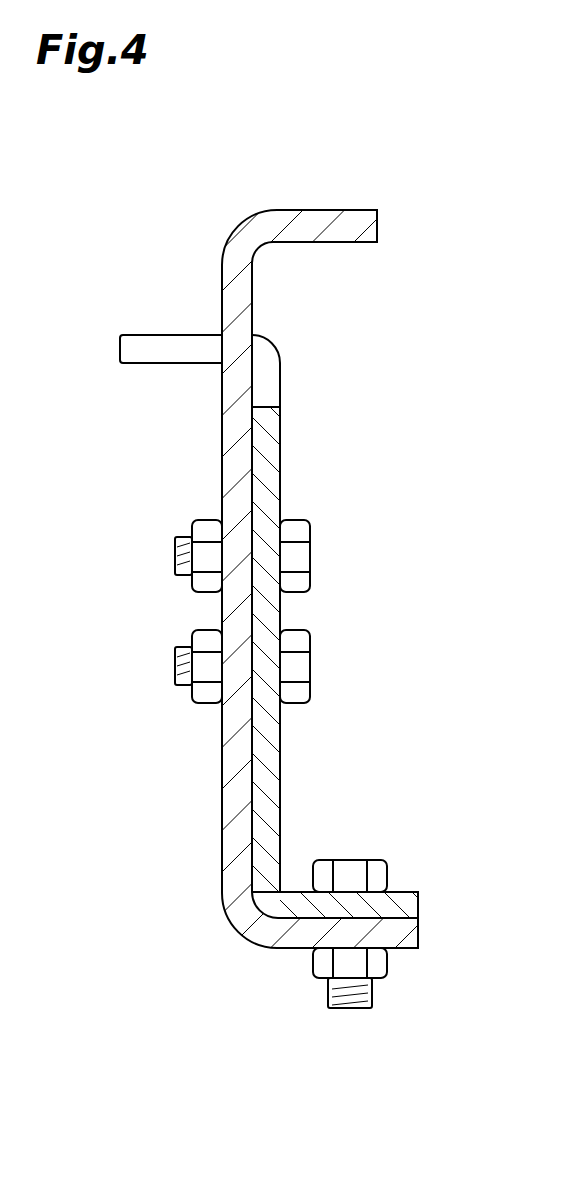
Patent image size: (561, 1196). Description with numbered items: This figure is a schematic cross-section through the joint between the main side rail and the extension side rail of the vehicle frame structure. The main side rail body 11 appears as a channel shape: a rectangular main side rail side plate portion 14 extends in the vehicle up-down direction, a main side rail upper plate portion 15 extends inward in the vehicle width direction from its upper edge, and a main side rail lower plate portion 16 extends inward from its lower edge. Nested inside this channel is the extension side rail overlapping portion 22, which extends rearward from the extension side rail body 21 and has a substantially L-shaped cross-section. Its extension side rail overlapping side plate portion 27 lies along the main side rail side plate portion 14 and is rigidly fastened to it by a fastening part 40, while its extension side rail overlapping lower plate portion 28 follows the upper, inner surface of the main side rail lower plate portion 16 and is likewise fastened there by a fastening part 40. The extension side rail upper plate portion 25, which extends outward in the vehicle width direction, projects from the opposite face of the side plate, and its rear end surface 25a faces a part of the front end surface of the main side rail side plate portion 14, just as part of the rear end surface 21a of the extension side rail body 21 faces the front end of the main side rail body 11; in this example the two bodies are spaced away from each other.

The main side rail body 11 is at (214, 278).
The main side rail side plate portion 14 is at (222, 477).
The main side rail upper plate portion 15 is at (320, 228).
The main side rail lower plate portion 16 is at (297, 934).
The extension side rail body 21 is at (291, 343).
The rear end surface of the extension side rail body 21a is at (262, 340).
The extension side rail overlapping portion 22 is at (292, 750).
The extension side rail upper plate portion 25 is at (141, 351).
The rear end surface of the extension side rail upper plate portion 25a is at (177, 350).
The extension side rail overlapping side plate portion 27 is at (266, 493).
The extension side rail overlapping lower plate portion 28 is at (400, 903).
The fastening part 40 is at (312, 558).